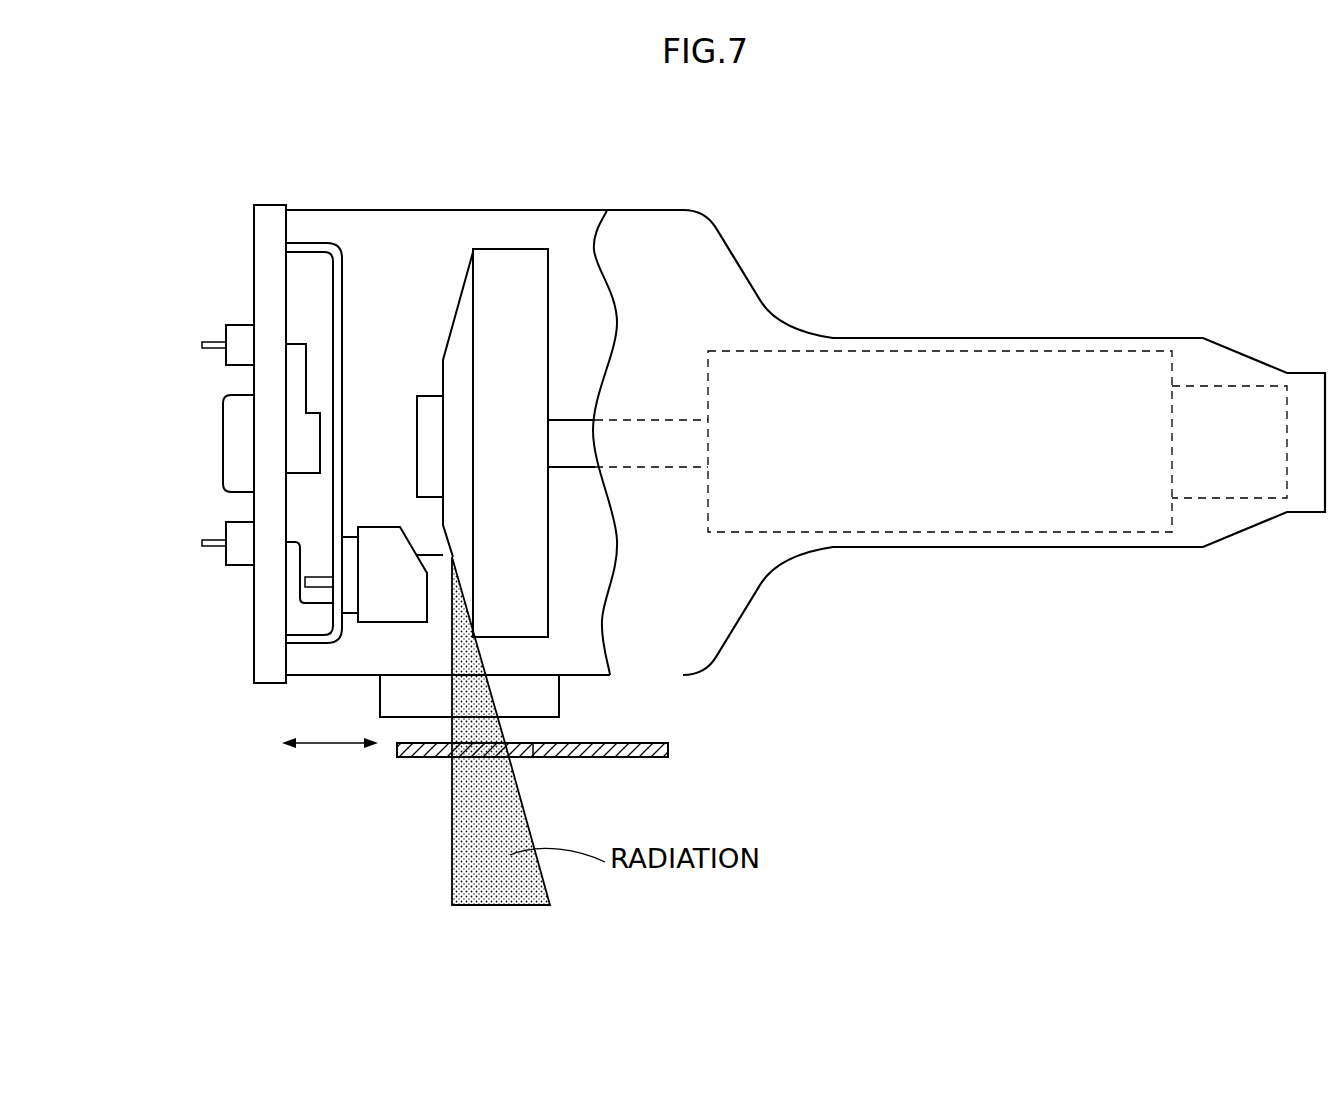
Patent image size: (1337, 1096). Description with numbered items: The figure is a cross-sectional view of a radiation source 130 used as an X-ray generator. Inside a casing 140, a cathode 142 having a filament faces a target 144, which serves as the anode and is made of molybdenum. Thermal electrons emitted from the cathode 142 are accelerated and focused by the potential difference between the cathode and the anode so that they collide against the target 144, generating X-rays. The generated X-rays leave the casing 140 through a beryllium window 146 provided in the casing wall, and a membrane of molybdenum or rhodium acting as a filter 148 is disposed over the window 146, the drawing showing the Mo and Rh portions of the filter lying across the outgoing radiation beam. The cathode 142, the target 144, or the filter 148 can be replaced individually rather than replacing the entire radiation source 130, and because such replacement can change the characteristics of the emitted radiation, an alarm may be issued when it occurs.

The radiation source 130 is at (819, 147).
The casing 140 is at (557, 194).
The cathode 142 is at (378, 591).
The target 144 is at (517, 283).
The window 146 is at (545, 698).
The filter 148 is at (632, 758).